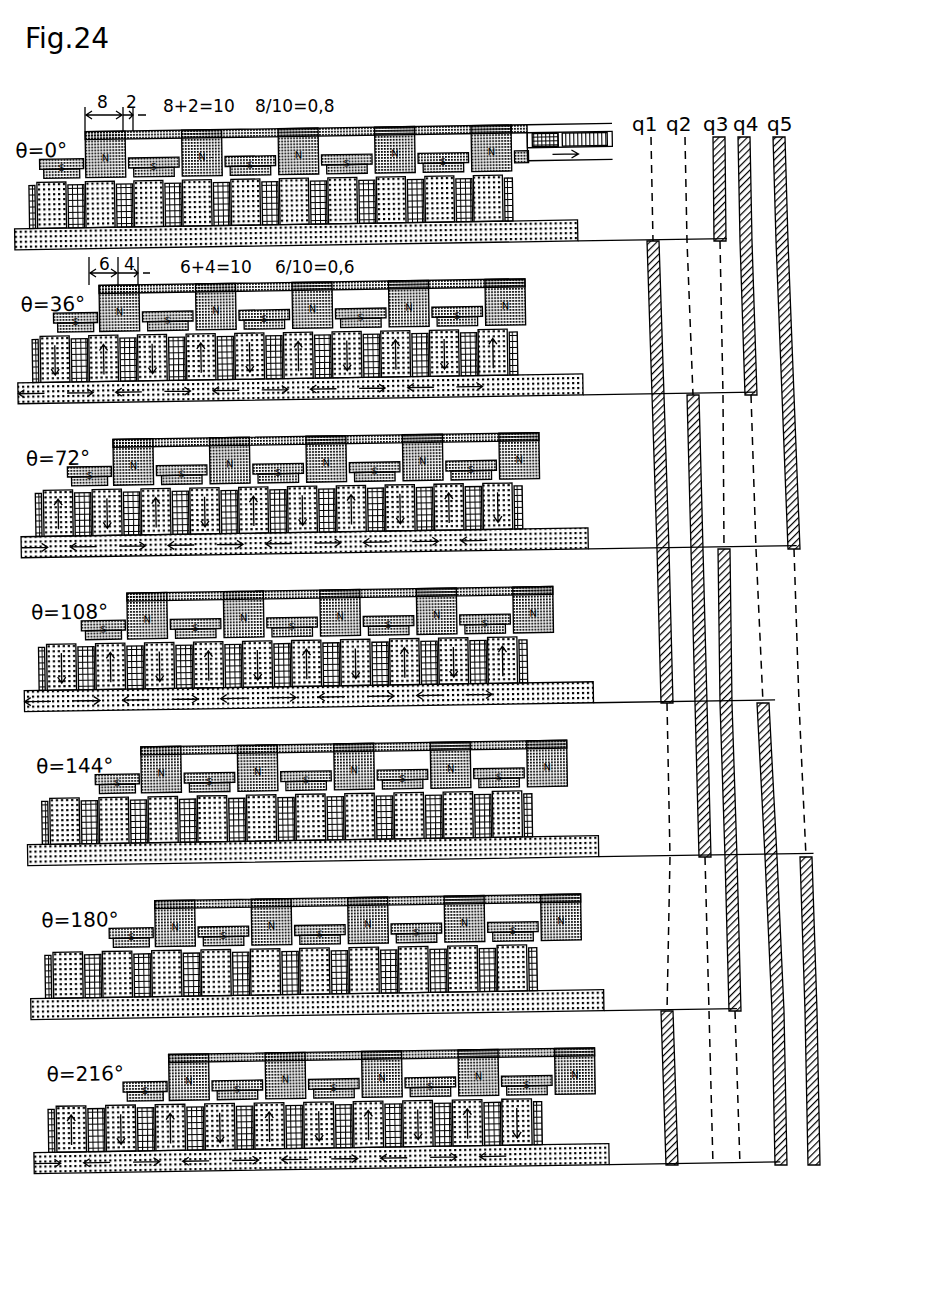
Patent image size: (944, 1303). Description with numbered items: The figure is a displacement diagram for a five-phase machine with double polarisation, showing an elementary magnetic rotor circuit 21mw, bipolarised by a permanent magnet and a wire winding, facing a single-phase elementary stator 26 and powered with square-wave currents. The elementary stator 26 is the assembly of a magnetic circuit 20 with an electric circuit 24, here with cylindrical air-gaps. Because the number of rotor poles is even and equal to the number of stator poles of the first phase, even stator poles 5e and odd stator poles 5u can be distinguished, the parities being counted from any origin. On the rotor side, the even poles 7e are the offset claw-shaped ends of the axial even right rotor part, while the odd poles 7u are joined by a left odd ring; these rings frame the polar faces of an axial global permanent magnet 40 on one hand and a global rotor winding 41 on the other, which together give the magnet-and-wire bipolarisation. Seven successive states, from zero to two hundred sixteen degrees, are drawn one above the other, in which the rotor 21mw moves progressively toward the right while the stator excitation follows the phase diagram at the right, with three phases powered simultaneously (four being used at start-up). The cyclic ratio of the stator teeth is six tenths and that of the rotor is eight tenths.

The global rotor winding 41 is at (548, 136).
The axial global permanent magnet 40 is at (585, 135).
The single phase elementary stator 26 is at (520, 190).
The elementary magnetic rotor circuit with magnet and wire bipolarisation 21mw is at (534, 299).
The magnetic circuit 20 is at (490, 341).
The even rotor poles 7e is at (526, 452).
The odd rotor poles 7u is at (470, 478).
The electric circuit 24 is at (522, 507).
The even stator poles 5e is at (510, 630).
The odd stator poles 5u is at (515, 642).